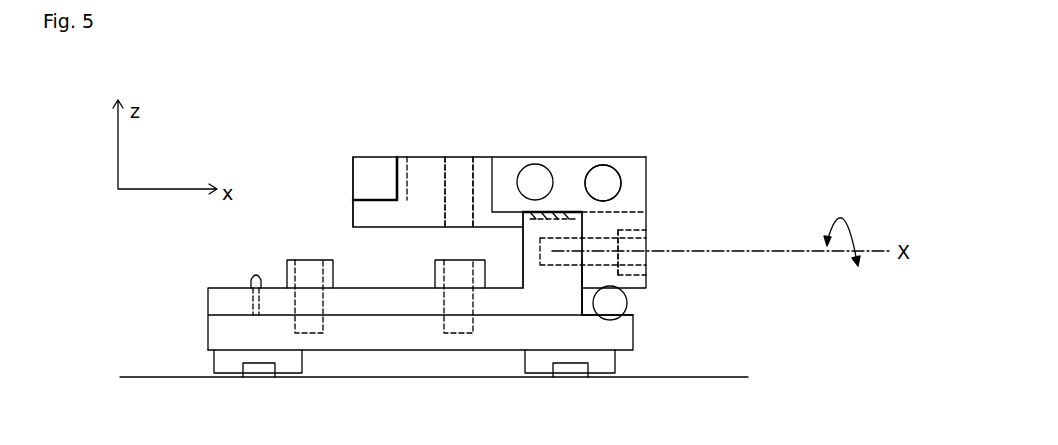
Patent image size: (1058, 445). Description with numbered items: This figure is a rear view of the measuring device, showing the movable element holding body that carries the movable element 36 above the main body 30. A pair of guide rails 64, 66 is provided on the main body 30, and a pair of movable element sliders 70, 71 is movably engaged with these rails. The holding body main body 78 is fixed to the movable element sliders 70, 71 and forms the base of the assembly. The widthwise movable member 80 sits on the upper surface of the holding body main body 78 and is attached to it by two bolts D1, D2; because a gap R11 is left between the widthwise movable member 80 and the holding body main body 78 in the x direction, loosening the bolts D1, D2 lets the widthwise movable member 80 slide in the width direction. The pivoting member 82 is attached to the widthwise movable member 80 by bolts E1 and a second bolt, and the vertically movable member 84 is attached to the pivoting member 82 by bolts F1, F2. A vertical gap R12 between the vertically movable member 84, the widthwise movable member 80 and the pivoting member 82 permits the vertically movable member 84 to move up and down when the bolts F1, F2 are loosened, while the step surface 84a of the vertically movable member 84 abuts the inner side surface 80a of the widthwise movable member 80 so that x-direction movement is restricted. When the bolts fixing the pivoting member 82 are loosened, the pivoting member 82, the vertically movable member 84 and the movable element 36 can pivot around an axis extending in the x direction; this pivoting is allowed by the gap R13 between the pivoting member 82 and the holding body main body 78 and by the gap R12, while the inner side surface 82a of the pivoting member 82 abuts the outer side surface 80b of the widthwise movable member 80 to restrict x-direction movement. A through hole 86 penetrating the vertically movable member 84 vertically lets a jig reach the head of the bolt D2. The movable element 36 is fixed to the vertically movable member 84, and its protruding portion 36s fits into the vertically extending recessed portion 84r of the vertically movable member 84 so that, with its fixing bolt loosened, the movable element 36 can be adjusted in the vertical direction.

The main body 30 is at (166, 392).
The movable element 36 is at (356, 162).
The protruding portion 36s is at (393, 181).
The guide rail 64 is at (567, 375).
The guide rail 66 is at (260, 374).
The movable element slider 70 is at (602, 360).
The movable element slider 71 is at (293, 362).
The holding body main body 78 is at (227, 328).
The widthwise movable member 80 is at (282, 296).
The inner side surface 80a is at (522, 250).
The outer side surface 80b is at (632, 315).
The pivoting member 82 is at (635, 216).
The inner side surface 82a is at (578, 278).
The vertically movable member 84 is at (418, 168).
The recessed portion 84r is at (393, 172).
The step surface 84a is at (547, 212).
The through hole 86 is at (460, 176).
The bolt D1 is at (303, 258).
The bolt D2 is at (460, 273).
The bolt F1 is at (535, 180).
The bolt F2 is at (605, 183).
The gap R11 is at (238, 283).
The gap R12 is at (543, 213).
The gap R13 is at (595, 301).
The bolt E1 is at (645, 268).